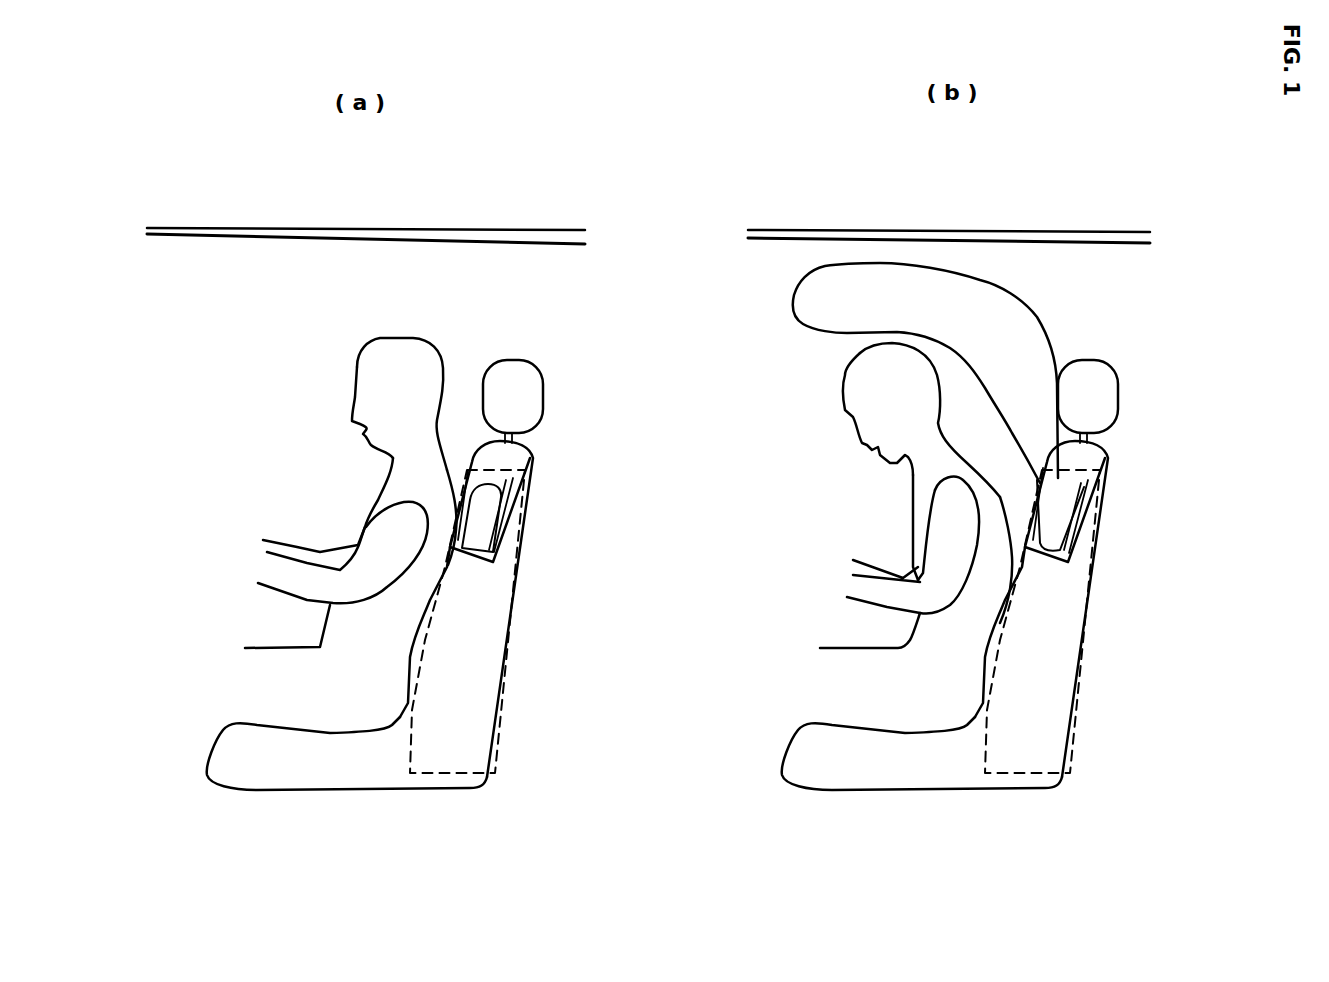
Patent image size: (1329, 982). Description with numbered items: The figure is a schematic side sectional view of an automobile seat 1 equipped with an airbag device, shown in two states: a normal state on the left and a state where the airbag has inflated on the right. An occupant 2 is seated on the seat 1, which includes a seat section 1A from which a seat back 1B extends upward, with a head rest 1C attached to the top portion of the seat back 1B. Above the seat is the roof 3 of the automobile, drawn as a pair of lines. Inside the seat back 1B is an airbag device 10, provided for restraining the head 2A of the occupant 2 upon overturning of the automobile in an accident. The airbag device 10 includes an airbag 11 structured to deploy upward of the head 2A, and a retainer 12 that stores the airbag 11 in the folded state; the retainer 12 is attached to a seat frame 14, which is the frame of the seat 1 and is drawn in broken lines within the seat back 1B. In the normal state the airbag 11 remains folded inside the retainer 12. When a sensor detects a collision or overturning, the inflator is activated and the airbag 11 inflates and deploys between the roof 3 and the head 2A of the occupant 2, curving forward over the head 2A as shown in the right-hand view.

The seat 1 is at (690, 604).
The seat section 1A is at (315, 780).
The seat back 1B is at (537, 460).
The head rest 1C is at (545, 395).
The occupant 2 is at (628, 464).
The head 2A is at (398, 356).
The roof 3 is at (383, 229).
The airbag device 10 is at (819, 412).
The airbag 11 is at (476, 461).
The retainer 12 is at (497, 547).
The seat frame 14 is at (436, 777).